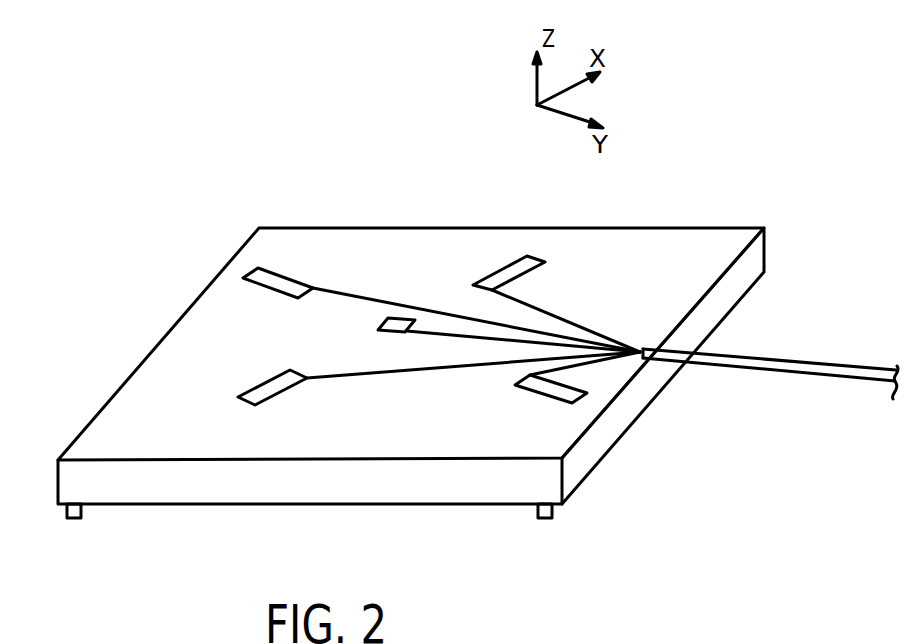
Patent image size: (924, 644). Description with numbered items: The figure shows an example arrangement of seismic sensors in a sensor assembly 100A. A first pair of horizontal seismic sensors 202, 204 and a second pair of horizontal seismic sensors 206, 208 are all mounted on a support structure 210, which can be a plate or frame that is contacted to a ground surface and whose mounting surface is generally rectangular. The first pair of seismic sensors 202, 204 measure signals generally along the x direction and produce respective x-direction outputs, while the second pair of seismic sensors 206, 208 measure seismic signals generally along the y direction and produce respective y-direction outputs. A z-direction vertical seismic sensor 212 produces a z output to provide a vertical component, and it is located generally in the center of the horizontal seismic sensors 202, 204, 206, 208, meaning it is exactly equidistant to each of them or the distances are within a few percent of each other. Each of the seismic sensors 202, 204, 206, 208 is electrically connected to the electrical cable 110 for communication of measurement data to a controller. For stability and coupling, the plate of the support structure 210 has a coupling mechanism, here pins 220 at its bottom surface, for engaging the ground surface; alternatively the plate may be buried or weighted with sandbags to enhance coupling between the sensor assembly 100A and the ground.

The sensor assembly 100A is at (773, 189).
The electrical cable 110 is at (763, 373).
The horizontal seismic sensor 202 is at (260, 383).
The horizontal seismic sensor 204 is at (502, 268).
The horizontal seismic sensor 206 is at (288, 278).
The horizontal seismic sensor 208 is at (547, 402).
The support structure 210 is at (712, 288).
The vertical seismic sensor 212 is at (386, 331).
The pins 220 is at (73, 520).